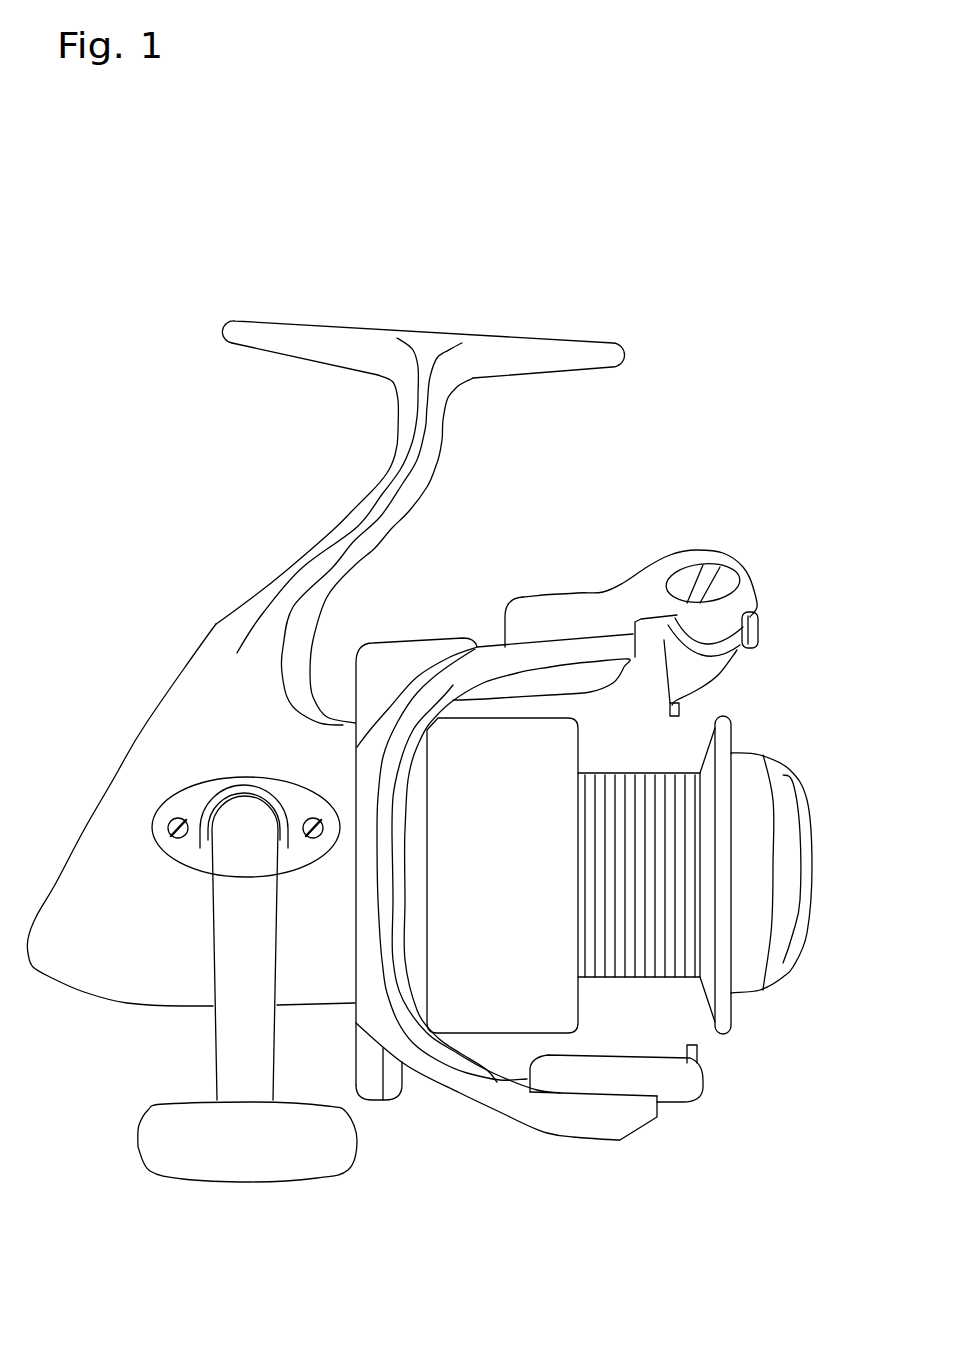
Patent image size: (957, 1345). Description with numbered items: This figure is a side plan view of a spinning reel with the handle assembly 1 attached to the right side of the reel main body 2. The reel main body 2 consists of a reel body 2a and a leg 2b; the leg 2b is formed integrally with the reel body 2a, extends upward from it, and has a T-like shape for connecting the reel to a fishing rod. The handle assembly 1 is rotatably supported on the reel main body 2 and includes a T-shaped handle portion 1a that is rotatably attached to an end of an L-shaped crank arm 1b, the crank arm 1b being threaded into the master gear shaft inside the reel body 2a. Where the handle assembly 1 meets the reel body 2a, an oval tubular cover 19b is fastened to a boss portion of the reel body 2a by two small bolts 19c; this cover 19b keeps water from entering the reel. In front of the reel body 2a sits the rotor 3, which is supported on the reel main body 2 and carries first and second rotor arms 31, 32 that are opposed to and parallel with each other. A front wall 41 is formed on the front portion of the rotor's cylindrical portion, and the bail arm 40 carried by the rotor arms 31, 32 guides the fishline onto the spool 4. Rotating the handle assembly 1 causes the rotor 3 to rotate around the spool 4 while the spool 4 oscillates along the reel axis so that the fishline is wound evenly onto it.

The handle assembly 1 is at (242, 1043).
The T-shaped handle portion 1a is at (253, 1160).
The L-shaped crank arm 1b is at (257, 1042).
The reel main body 2 is at (147, 713).
The reel body 2a is at (124, 778).
The leg 2b is at (228, 612).
The rotor 3 is at (415, 637).
The first rotor arm 31 is at (550, 650).
The second rotor arm 32 is at (560, 1115).
The spool 4 is at (628, 770).
The bail arm 40 is at (773, 637).
The front wall 41 is at (677, 703).
The tubular cover 19b is at (199, 796).
The small bolts 19c is at (168, 831).